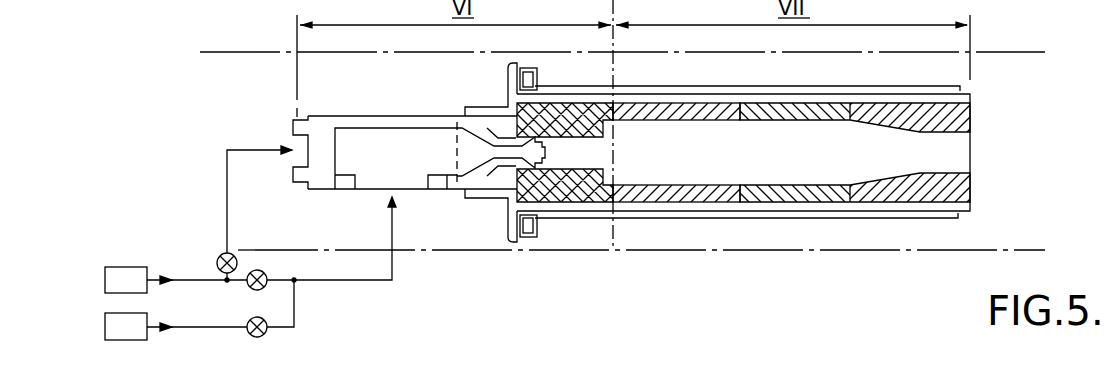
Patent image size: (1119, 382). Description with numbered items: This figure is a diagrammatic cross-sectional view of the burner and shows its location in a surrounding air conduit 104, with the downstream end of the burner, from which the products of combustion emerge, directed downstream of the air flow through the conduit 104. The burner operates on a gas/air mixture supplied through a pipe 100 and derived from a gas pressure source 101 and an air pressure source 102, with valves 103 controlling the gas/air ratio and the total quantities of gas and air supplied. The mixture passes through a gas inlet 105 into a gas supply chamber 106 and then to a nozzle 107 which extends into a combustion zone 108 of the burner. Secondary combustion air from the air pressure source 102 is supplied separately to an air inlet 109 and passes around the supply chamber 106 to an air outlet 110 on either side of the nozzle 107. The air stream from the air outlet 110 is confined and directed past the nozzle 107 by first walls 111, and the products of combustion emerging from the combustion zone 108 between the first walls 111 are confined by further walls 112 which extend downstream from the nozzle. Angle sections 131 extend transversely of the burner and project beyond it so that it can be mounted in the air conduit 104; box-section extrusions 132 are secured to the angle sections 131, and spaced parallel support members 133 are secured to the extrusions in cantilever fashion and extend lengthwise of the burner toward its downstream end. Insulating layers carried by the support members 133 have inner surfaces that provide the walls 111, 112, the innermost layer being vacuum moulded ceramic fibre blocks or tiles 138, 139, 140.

The pipe 100 is at (393, 267).
The gas pressure source 101 is at (127, 328).
The air pressure source 102 is at (125, 282).
The valves 103 is at (243, 290).
The air conduit 104 is at (713, 220).
The gas inlet 105 is at (371, 180).
The gas supply chamber 106 is at (368, 145).
The nozzle 107 is at (546, 152).
The combustion zone 108 is at (566, 170).
The air inlet 109 is at (290, 158).
The air outlet 110 is at (533, 124).
The first walls 111 is at (552, 136).
The further walls 112 is at (767, 122).
The angle sections 131 is at (497, 107).
The box-section extrusions 132 is at (537, 72).
The support members 133 is at (960, 87).
The ceramic fibre tiles 138 is at (643, 104).
The ceramic fibre tiles 139 is at (778, 112).
The ceramic fibre tiles 140 is at (907, 190).